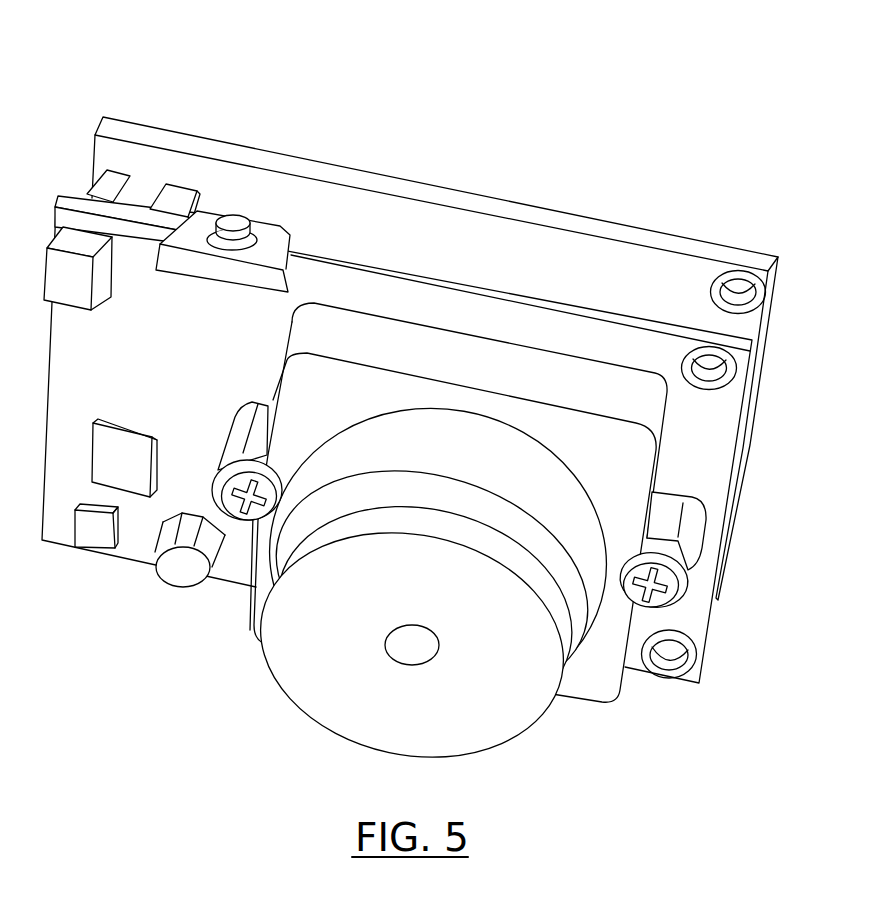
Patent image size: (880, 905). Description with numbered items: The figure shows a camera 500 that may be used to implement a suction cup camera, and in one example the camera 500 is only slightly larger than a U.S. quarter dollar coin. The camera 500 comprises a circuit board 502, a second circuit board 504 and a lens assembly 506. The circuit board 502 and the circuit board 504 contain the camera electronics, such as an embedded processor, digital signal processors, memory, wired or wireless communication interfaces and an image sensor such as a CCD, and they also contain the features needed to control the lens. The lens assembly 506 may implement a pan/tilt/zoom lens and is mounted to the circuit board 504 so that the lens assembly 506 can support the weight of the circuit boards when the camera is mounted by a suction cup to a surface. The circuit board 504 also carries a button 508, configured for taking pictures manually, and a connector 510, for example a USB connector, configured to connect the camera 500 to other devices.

The camera 500 is at (107, 35).
The circuit board 502 is at (96, 152).
The circuit board 504 is at (709, 633).
The lens assembly 506 is at (340, 440).
The button 508 is at (287, 236).
The connector 510 is at (99, 306).